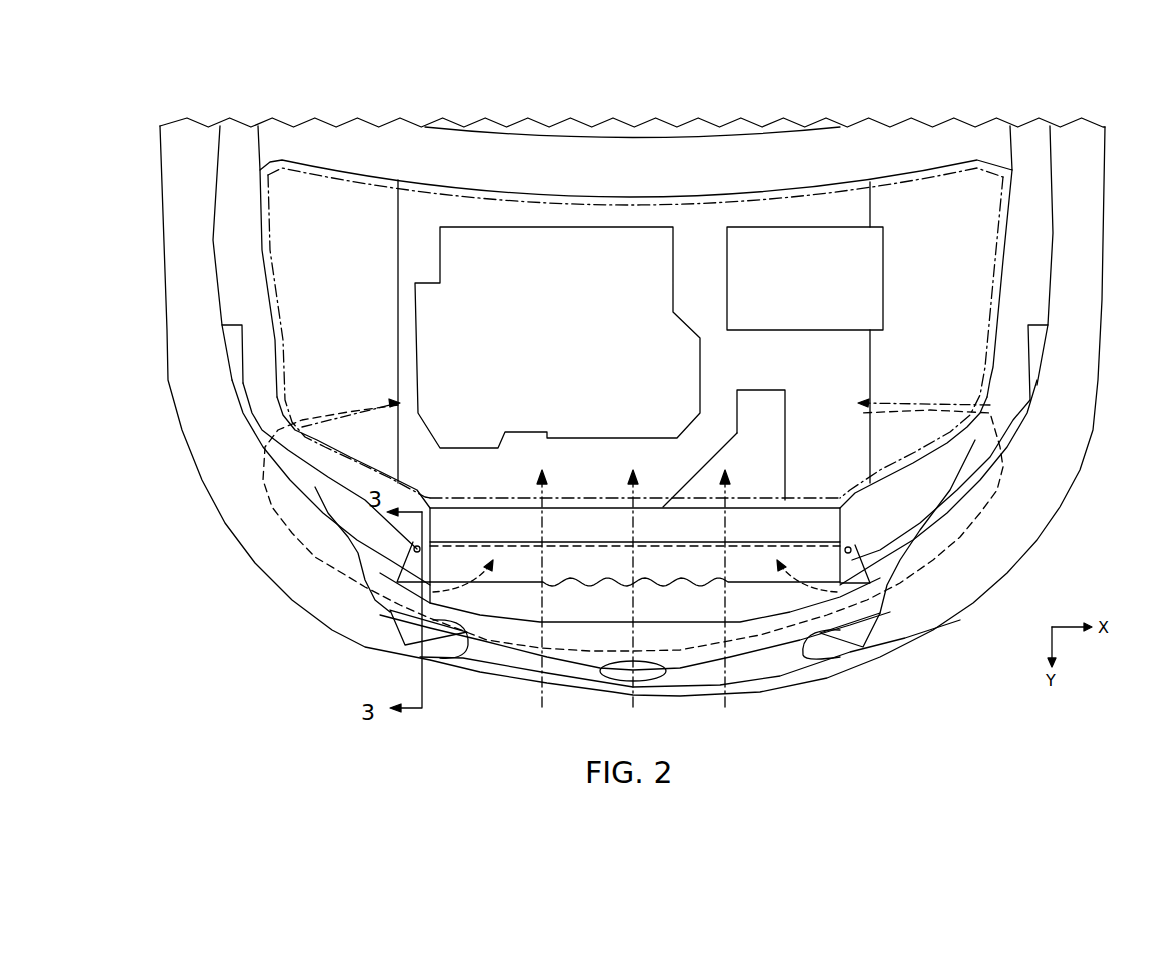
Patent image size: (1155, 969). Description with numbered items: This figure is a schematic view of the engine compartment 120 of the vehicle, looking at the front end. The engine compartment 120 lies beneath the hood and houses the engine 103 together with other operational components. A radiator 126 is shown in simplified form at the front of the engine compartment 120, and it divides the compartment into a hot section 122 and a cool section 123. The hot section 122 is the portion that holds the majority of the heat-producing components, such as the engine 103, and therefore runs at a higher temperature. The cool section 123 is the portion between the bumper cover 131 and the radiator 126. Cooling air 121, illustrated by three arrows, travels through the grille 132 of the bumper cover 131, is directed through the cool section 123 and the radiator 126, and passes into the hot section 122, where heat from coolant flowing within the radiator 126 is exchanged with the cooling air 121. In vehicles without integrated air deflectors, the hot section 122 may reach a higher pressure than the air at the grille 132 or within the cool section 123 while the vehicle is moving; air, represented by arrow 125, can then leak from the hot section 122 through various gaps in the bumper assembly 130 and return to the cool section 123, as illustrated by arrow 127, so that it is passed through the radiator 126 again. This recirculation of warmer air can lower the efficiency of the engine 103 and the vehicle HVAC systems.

The engine compartment 120 is at (145, 120).
The engine 103 is at (405, 293).
The hot section 122 is at (1000, 268).
The arrow (recirculating air) 127 is at (320, 412).
The arrow (leaking air) 125 is at (357, 417).
The radiator 126 is at (837, 508).
The cooling air 121 is at (543, 707).
The cool section 123 is at (763, 633).
The grille 132 is at (785, 690).
The bumper assembly 130 is at (893, 668).
The bumper cover 131 is at (957, 620).